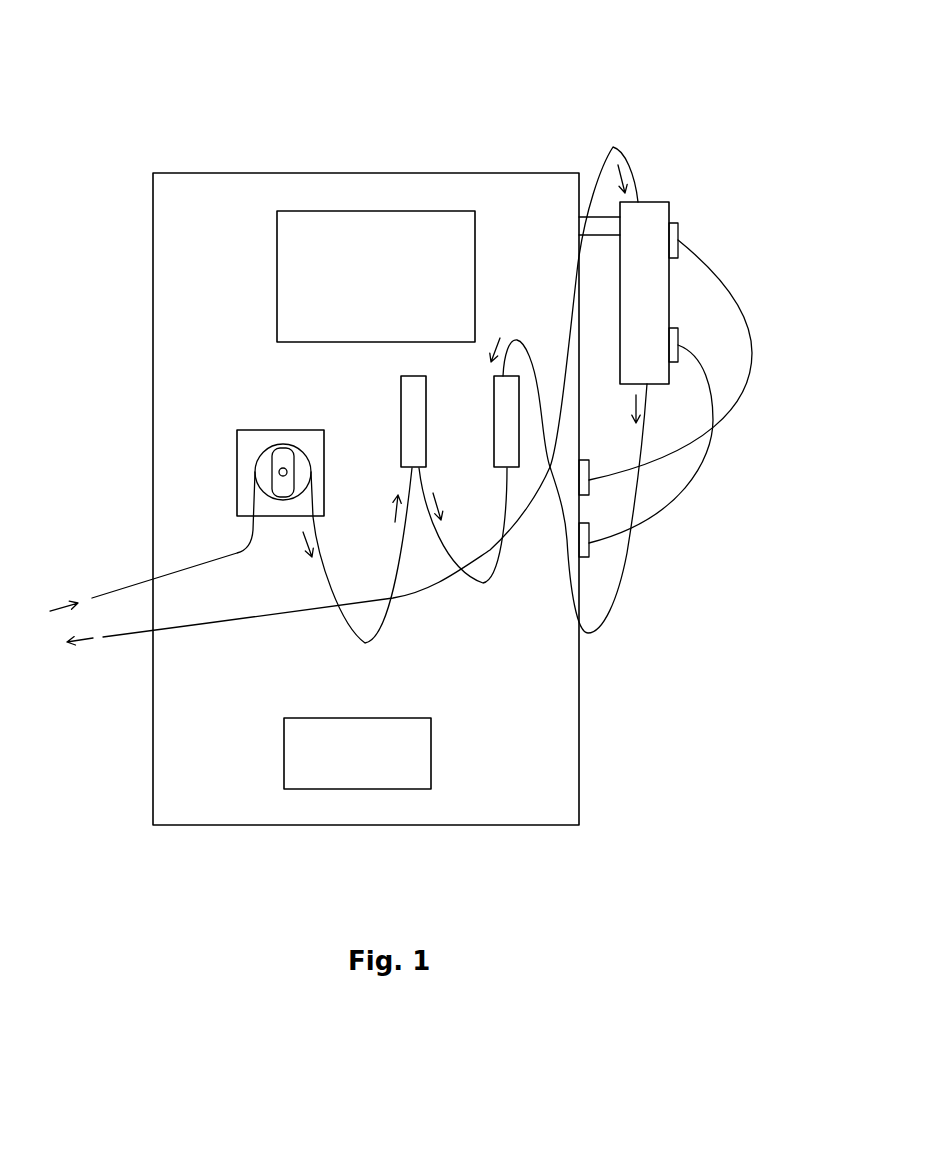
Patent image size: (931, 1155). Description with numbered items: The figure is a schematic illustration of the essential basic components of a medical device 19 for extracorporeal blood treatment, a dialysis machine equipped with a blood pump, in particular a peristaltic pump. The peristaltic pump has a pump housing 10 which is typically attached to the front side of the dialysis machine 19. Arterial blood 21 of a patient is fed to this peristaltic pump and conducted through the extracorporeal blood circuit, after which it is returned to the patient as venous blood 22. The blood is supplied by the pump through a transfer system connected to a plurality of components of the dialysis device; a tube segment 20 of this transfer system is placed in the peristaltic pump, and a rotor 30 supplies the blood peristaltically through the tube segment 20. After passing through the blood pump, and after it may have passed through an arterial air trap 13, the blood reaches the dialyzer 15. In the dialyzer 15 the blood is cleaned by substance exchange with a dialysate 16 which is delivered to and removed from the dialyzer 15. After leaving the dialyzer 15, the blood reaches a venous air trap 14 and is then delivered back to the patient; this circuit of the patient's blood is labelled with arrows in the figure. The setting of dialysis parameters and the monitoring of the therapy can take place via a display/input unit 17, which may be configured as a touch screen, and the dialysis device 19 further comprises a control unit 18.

The medical device 19 is at (270, 103).
The display/input unit 17 is at (288, 245).
The control unit 18 is at (425, 753).
The pump housing 10 is at (257, 435).
The tube segment 20 is at (252, 503).
The rotor 30 is at (277, 450).
The arterial air trap 13 is at (407, 410).
The venous air trap 14 is at (502, 437).
The dialyzer 15 is at (655, 212).
The dialysate 16 is at (752, 353).
The arterial blood 21 is at (62, 606).
The venous blood 22 is at (90, 650).